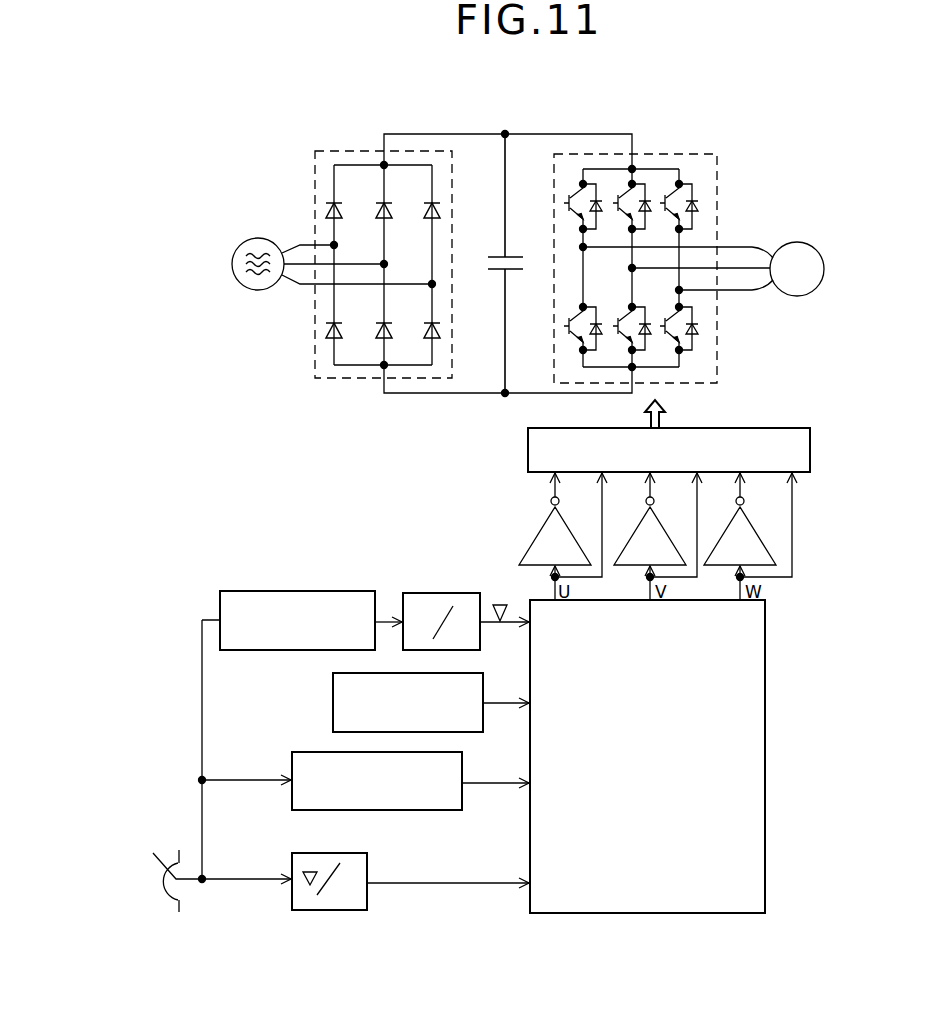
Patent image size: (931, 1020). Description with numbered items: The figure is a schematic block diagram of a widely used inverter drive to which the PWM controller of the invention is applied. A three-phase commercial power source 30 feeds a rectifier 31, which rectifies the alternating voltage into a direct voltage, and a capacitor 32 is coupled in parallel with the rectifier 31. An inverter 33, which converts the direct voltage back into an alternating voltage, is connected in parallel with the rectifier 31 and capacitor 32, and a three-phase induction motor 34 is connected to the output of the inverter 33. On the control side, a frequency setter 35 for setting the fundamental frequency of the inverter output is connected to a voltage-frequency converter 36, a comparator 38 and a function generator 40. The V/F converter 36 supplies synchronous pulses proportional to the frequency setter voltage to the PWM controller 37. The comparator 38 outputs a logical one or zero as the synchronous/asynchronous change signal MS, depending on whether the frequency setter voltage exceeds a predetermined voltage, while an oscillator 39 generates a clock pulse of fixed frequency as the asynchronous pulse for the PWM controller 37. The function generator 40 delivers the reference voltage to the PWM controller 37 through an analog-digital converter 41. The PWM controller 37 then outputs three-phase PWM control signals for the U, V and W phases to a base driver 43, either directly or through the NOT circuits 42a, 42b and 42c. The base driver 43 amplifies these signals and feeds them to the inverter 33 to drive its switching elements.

The three-phase commercial power source 30 is at (270, 238).
The rectifier 31 is at (453, 175).
The capacitor 32 is at (514, 255).
The inverter 33 is at (683, 153).
The three-phase induction motor 34 is at (801, 242).
The frequency setter 35 is at (176, 895).
The voltage-frequency (V/F) converter 36 is at (356, 853).
The PWM controller 37 is at (766, 715).
The comparator 38 is at (302, 752).
The oscillator 39 is at (482, 674).
The function generator 40 is at (333, 591).
The analog-digital (A/D) converter 41 is at (441, 592).
The NOT circuit 42a is at (567, 525).
The NOT circuit 42b is at (663, 525).
The NOT circuit 42c is at (752, 525).
The base driver 43 is at (763, 430).